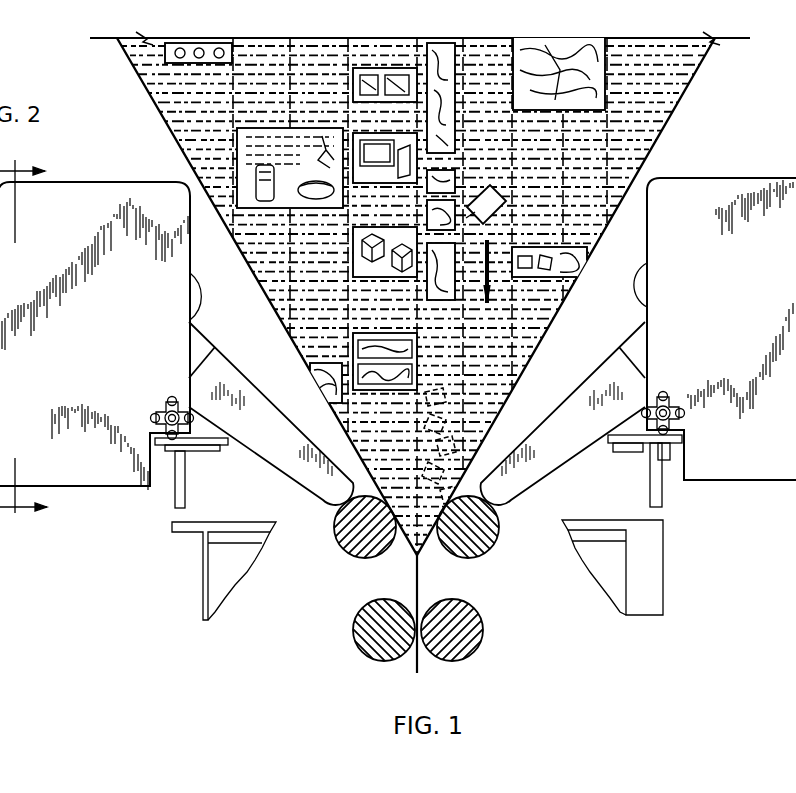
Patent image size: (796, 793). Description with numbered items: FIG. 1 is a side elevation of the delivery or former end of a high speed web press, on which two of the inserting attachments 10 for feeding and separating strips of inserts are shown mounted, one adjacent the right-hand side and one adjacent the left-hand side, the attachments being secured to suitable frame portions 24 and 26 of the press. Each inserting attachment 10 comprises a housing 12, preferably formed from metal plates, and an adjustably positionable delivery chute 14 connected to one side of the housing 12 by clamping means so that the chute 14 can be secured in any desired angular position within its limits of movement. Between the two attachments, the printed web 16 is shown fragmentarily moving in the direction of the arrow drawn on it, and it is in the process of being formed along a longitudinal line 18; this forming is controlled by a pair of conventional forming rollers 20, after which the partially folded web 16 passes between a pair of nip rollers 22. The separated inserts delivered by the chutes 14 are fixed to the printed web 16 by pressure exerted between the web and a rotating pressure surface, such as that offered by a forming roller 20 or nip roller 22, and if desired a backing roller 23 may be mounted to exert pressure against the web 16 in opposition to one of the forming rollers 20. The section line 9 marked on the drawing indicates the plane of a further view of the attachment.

The section line 9- 9 is at (23, 338).
The inserting attachment 10 is at (82, 182).
The housing 12 is at (747, 178).
The delivery chute 14 is at (245, 383).
The printed web 16 is at (658, 137).
The longitudinal line 18 is at (405, 300).
The forming rollers 20 is at (346, 551).
The nip rollers 22 is at (353, 642).
The backing roller 23 is at (494, 421).
The frame portion 24 is at (185, 476).
The frame portion 26 is at (650, 476).